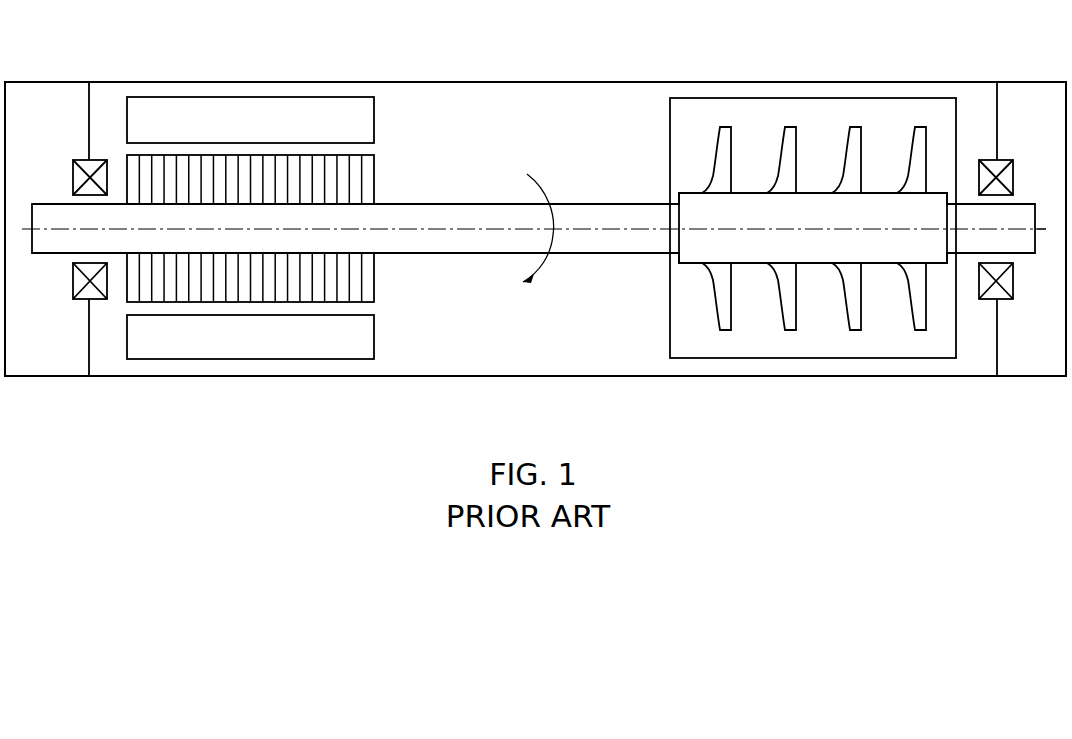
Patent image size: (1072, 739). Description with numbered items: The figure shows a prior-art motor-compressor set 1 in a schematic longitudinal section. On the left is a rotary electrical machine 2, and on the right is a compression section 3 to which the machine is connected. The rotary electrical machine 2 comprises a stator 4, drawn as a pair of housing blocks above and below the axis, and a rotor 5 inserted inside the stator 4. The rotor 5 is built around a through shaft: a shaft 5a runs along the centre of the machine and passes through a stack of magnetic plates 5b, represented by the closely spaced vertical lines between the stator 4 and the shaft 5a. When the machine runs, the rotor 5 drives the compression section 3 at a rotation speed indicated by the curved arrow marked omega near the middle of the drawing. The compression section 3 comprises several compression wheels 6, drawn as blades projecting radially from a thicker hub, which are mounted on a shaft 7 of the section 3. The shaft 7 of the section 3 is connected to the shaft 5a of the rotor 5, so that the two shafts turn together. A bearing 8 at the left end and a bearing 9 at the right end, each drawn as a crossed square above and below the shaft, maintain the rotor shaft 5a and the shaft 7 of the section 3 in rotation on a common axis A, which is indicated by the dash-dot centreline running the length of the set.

The motor-compressor set 1 is at (509, 45).
The rotary electrical machine 2 is at (228, 229).
The compression section 3 is at (813, 232).
The stator 4 is at (328, 112).
The rotor 5 is at (228, 239).
The shaft 5a is at (124, 237).
The magnetic plates 5b is at (205, 272).
The compression wheels 6 is at (790, 126).
The shaft 7 is at (885, 253).
The bearing 8 is at (73, 156).
The bearing 9 is at (1013, 153).
The axis A is at (1045, 226).